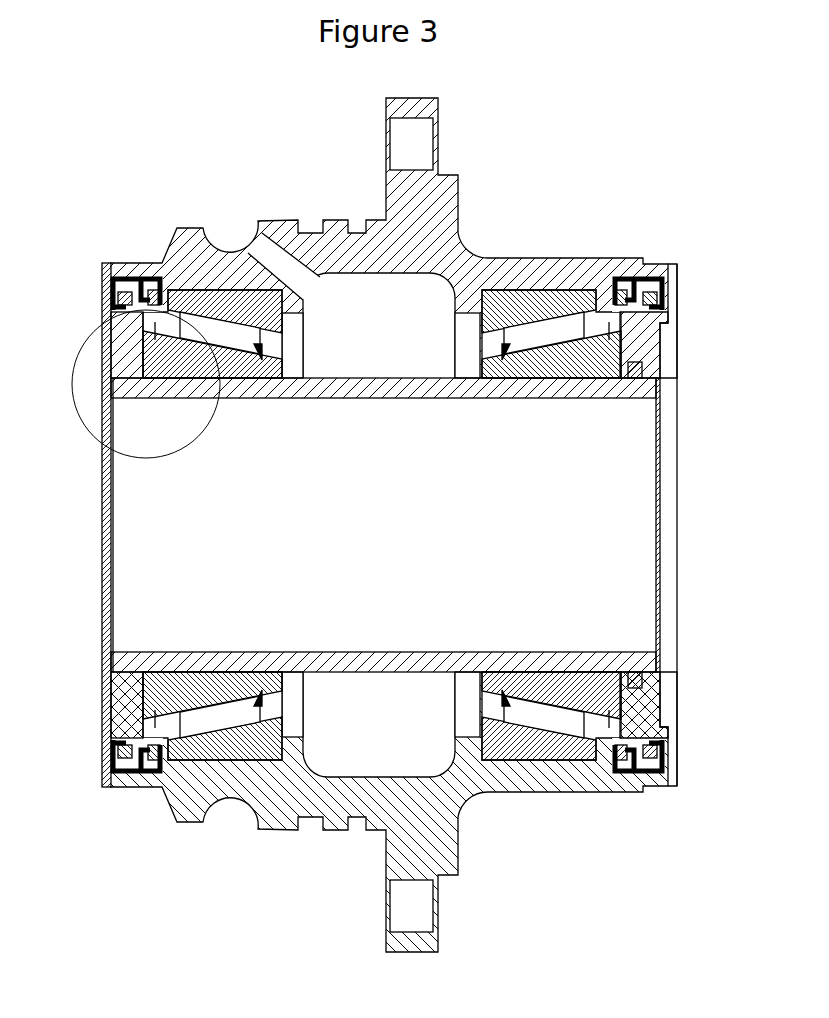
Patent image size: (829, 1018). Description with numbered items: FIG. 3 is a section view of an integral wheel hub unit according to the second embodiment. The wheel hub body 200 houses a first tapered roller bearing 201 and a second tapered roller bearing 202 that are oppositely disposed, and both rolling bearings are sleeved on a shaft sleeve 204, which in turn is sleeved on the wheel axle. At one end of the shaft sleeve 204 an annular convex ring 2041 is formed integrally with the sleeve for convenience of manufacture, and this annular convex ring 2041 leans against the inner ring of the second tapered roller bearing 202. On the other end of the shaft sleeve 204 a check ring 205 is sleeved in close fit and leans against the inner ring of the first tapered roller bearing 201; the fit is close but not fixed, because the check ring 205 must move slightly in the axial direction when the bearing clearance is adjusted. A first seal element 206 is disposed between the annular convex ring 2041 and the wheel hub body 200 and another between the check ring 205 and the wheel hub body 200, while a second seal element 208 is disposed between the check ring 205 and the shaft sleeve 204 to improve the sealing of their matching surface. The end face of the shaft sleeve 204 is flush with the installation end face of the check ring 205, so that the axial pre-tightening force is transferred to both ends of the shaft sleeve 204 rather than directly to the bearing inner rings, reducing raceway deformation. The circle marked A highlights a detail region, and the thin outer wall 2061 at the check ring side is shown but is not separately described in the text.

The wheel hub body 200 is at (440, 212).
The first tapered roller bearing 201 is at (540, 267).
The second tapered roller bearing 202 is at (237, 278).
The shaft sleeve 204 is at (445, 652).
The annular convex ring 2041 is at (120, 702).
The check ring 205 is at (683, 318).
The first seal element 206 is at (110, 290).
The outer ring wall 2061 is at (662, 569).
The second seal element 208 is at (640, 380).
The detail region A is at (175, 455).